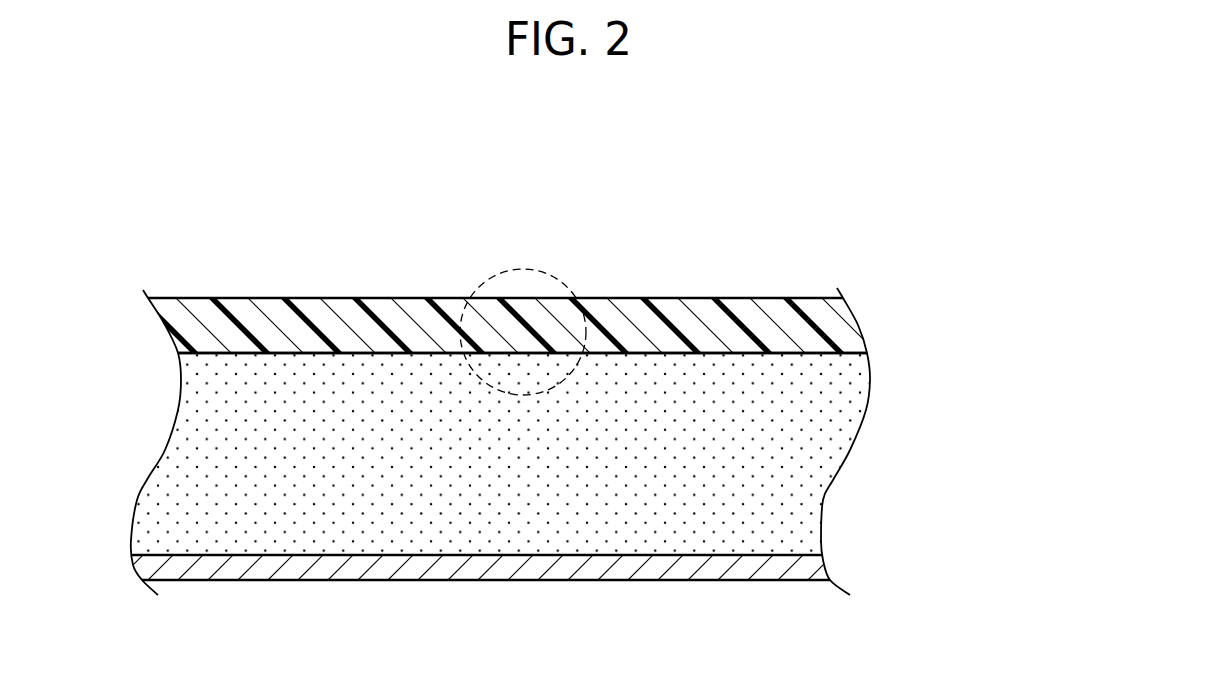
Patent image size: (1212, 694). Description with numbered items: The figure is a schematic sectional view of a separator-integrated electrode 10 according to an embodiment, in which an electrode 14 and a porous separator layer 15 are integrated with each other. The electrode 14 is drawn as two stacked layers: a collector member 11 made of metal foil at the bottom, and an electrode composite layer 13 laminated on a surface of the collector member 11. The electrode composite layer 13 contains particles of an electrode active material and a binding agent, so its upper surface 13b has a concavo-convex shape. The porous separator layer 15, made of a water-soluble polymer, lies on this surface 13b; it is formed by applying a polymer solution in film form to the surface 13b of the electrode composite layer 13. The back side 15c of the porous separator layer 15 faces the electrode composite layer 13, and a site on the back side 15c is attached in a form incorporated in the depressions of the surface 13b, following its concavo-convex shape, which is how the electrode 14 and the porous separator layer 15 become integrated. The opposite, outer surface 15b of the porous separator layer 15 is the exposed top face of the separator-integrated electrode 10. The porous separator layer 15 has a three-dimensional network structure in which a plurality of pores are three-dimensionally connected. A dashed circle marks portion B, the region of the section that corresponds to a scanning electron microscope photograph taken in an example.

The separator-integrated electrode 10 is at (531, 351).
The collector member 11 is at (530, 561).
The electrode composite layer 13 is at (534, 377).
The surface of the electrode composite layer 13b is at (743, 355).
The electrode 14 is at (561, 390).
The porous separator layer 15 is at (508, 300).
The surface of the porous separator layer 15b is at (663, 299).
The back side of the porous separator layer 15c is at (798, 355).
The portion B is at (500, 272).